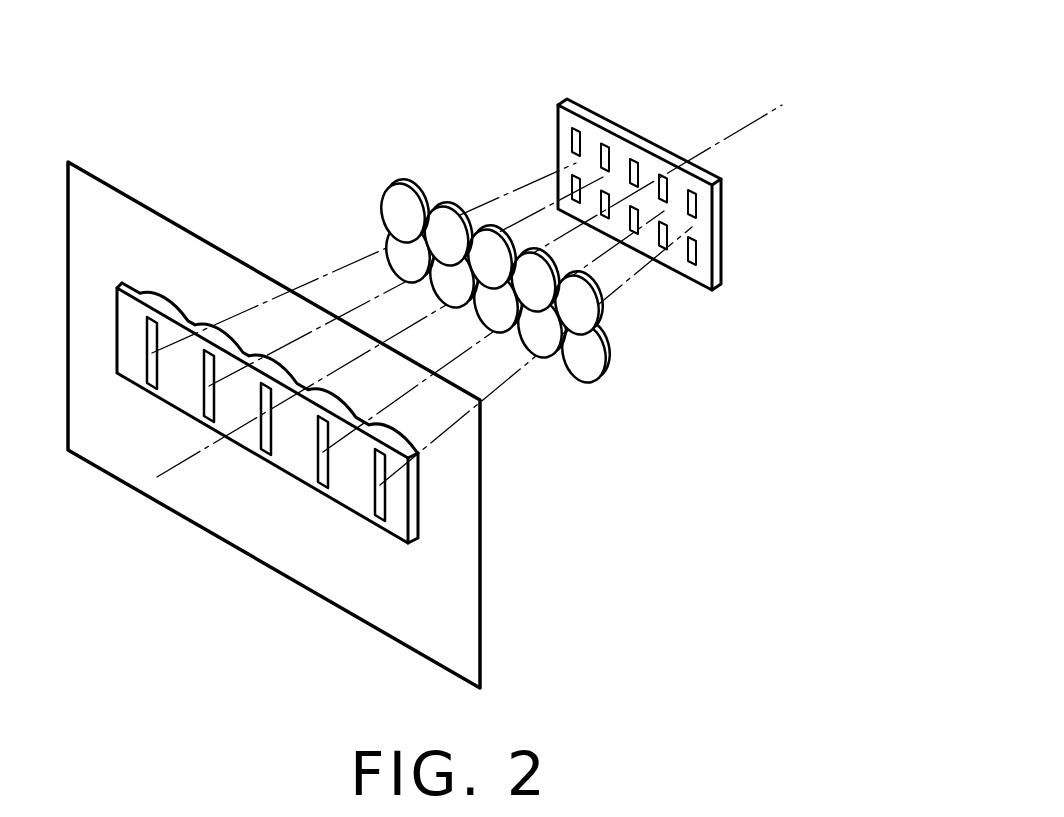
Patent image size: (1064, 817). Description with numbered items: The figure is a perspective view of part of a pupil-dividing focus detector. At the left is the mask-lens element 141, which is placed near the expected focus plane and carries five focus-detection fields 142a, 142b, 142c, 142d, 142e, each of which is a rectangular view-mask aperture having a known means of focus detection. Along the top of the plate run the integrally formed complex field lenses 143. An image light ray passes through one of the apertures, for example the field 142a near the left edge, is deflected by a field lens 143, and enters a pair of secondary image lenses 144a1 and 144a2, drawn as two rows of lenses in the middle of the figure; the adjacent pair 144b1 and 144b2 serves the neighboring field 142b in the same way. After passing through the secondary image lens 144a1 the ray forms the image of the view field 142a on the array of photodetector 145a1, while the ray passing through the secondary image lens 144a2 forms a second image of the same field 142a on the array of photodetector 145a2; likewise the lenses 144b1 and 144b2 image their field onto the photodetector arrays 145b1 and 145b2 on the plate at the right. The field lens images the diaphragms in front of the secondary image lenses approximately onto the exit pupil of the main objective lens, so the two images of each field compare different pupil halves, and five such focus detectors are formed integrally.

The mask-lens element 141 is at (468, 560).
The focus-detection field 142a is at (157, 389).
The focus-detection field 142b is at (206, 421).
The focus-detection field 142c is at (262, 455).
The focus-detection field 142d is at (319, 486).
The focus-detection field 142e is at (380, 522).
The complex field lens 143 is at (145, 285).
The secondary image lens 144a1 is at (388, 190).
The secondary image lens 144a2 is at (387, 234).
The secondary image lens 144b1 is at (437, 207).
The secondary image lens 144b2 is at (397, 257).
The array of photodetector 145a1 is at (572, 128).
The array of photodetector 145a2 is at (574, 175).
The array of photodetector 145b1 is at (601, 144).
The array of photodetector 145b2 is at (605, 190).